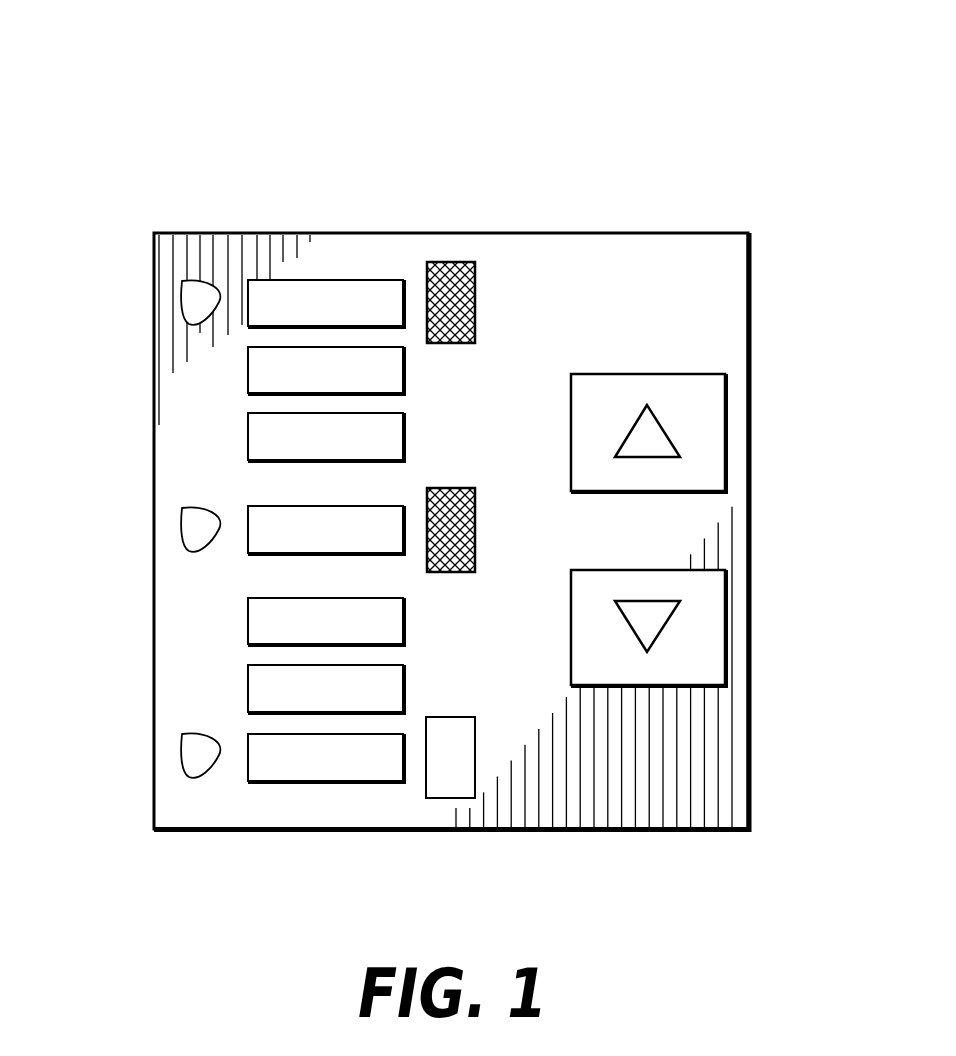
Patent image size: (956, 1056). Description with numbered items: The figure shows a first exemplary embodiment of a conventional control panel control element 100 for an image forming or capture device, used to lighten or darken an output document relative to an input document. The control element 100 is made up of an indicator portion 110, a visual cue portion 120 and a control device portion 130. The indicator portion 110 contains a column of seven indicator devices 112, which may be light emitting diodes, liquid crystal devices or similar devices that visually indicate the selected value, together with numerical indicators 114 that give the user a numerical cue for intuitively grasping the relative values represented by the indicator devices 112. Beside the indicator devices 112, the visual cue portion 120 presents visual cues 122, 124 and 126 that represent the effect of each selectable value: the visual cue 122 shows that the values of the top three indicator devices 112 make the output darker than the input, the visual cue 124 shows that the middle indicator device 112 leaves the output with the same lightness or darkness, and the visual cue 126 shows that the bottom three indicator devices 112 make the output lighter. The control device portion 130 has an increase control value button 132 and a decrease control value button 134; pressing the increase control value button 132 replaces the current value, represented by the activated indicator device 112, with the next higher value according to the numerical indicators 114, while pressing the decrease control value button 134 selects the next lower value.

The control panel control element 100 is at (688, 74).
The indicator portion 110 is at (338, 252).
The indicator devices 112 is at (270, 292).
The numerical indicators 114 is at (183, 281).
The visual cue portion 120 is at (462, 245).
The visual cue 122 is at (470, 318).
The visual cue 124 is at (440, 495).
The visual cue 126 is at (441, 805).
The control device portion 130 is at (732, 375).
The increase control value button 132 is at (685, 373).
The decrease control value button 134 is at (690, 686).